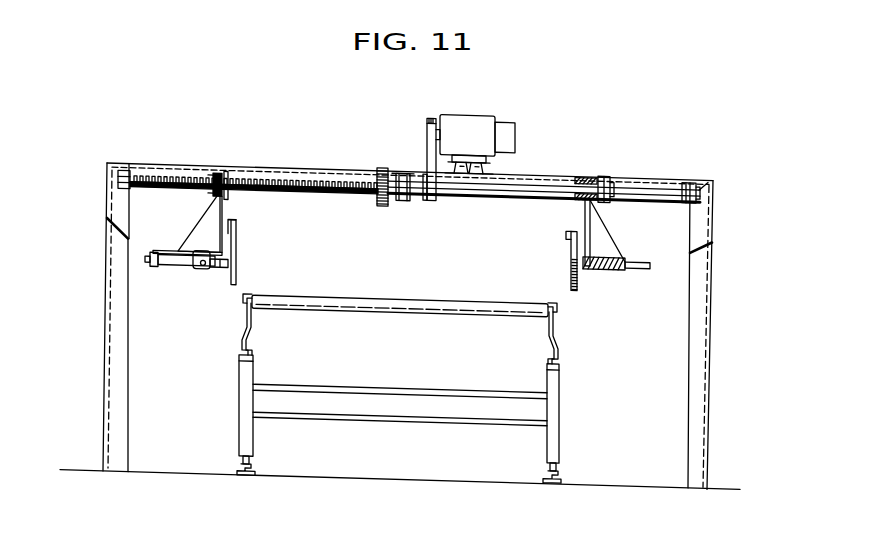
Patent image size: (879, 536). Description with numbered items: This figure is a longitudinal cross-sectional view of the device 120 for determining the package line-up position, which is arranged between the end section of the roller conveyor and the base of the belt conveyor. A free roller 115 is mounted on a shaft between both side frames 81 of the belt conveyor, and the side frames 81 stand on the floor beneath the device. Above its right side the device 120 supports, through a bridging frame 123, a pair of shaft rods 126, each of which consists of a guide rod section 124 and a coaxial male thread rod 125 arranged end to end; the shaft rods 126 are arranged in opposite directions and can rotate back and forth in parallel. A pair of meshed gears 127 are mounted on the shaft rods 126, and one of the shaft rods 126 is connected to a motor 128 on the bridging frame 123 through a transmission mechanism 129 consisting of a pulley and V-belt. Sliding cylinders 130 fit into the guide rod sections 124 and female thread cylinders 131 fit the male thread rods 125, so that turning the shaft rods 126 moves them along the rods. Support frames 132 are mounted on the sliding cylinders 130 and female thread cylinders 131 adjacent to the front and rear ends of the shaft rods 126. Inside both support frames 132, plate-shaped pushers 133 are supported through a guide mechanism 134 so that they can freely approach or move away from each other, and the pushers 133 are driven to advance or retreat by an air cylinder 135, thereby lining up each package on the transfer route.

The side frames 81 is at (240, 326).
The free roller 115 is at (432, 289).
The device for determining package line-up position 120 is at (578, 133).
The bridging frame 123 is at (330, 166).
The guide rod section 124 is at (500, 181).
The male thread rod 125 is at (327, 187).
The shaft rods 126 is at (400, 165).
The meshed gears 127 is at (380, 194).
The motor 128 is at (475, 105).
The transmission mechanism 129 is at (428, 116).
The sliding cylinders 130 is at (600, 184).
The female thread cylinders 131 is at (215, 187).
The support frames 132 is at (197, 226).
The pushers 133 is at (236, 234).
The guide mechanism 134 is at (197, 269).
The air cylinder 135 is at (165, 266).